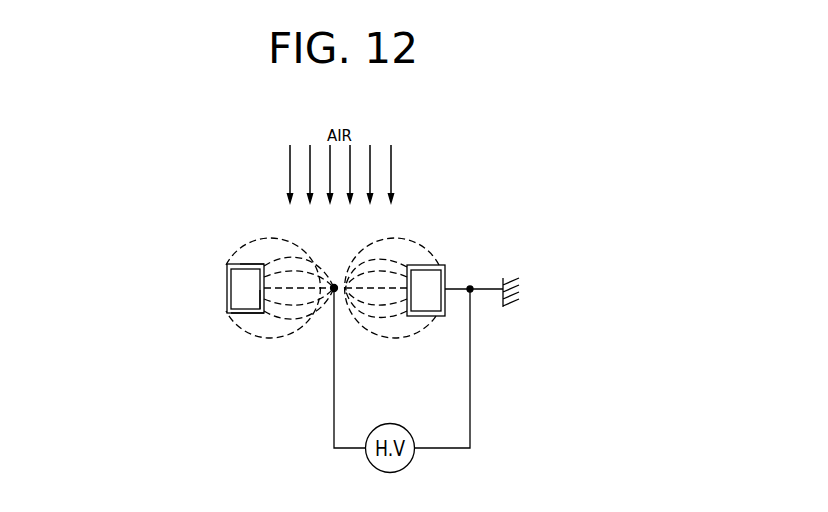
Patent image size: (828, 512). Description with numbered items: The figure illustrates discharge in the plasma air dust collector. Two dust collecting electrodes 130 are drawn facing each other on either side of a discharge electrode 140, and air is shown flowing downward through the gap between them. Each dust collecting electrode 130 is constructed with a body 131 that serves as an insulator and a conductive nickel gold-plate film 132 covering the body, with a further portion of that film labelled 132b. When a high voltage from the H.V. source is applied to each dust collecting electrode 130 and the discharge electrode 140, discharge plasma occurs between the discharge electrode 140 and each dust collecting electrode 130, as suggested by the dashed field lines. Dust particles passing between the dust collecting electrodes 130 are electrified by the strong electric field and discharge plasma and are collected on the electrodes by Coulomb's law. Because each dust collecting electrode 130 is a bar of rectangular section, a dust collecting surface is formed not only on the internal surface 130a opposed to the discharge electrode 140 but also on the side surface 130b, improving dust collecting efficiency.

The dust collecting electrode 130 is at (130, 221).
The body 131 is at (227, 265).
The conductive nickel gold-plate film 132 is at (245, 278).
The electrode upper surface 132b is at (252, 265).
The internal surface 130a is at (262, 304).
The side surface 130b is at (243, 313).
The discharge electrode 140 is at (332, 293).